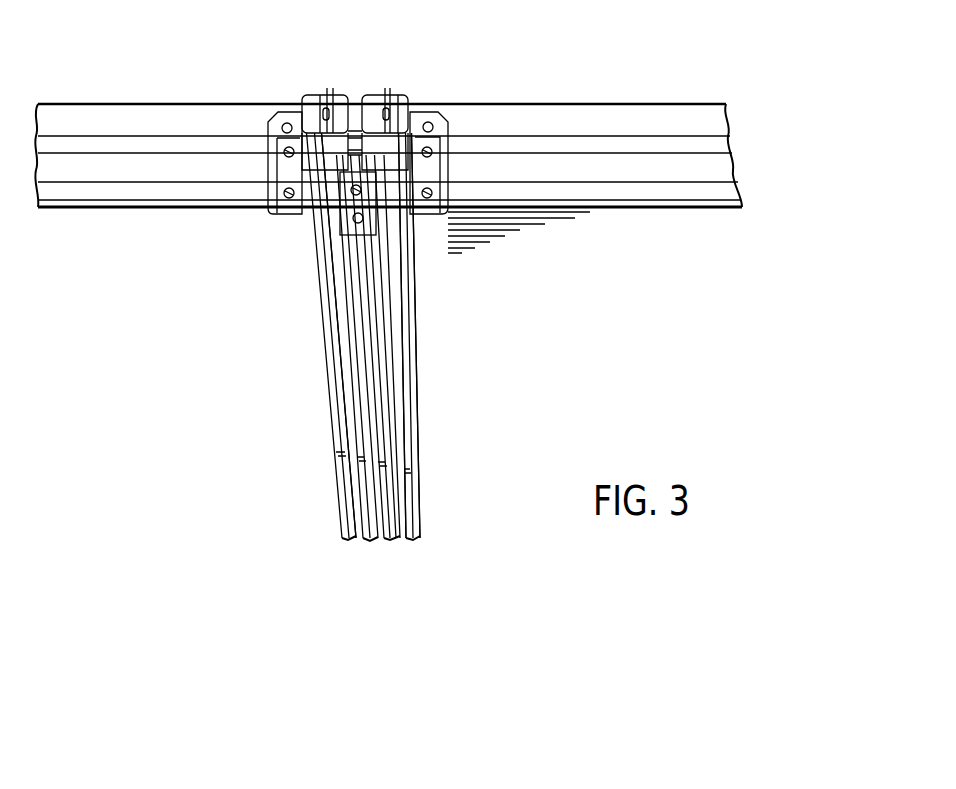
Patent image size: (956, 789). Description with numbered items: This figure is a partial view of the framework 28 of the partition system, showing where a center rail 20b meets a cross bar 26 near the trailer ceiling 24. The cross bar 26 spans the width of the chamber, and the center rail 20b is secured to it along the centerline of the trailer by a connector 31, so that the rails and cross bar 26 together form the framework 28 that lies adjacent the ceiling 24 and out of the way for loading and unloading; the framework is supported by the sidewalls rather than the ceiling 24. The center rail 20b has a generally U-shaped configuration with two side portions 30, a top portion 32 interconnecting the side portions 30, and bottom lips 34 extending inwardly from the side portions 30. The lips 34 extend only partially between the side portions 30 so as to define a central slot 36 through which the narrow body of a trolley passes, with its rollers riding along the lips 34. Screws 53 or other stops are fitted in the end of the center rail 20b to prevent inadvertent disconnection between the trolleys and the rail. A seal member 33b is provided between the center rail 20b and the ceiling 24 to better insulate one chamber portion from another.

The center rail 20b is at (338, 493).
The ceiling 24 is at (586, 333).
The cross bar 26 is at (695, 205).
The framework 28 is at (196, 416).
The side portion 30 is at (302, 105).
The connector 31 is at (437, 160).
The top portion 32 is at (310, 94).
The seal member 33b is at (422, 430).
The bottom lip 34 is at (357, 338).
The central slot 36 is at (331, 274).
The screw 53 is at (384, 108).